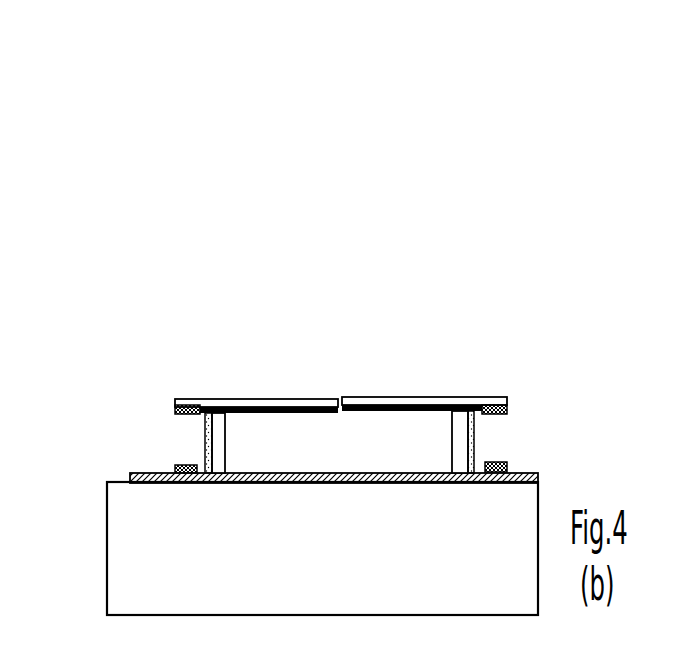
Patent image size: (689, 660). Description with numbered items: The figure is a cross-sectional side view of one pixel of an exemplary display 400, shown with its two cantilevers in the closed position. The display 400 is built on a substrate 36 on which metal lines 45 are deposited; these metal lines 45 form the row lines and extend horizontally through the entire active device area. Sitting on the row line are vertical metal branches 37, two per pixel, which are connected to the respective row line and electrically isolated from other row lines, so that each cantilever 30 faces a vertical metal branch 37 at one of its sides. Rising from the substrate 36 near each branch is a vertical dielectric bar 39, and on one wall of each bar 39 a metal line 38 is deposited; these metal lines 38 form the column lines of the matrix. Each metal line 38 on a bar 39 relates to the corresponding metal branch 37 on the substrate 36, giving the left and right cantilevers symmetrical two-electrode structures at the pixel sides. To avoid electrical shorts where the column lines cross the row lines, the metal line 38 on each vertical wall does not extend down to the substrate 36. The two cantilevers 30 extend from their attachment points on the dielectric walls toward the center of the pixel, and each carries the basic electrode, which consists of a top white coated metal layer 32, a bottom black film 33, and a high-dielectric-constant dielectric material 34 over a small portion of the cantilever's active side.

The display 400 is at (324, 335).
The cantilever 30 is at (340, 369).
The top white coated metal layer 32 is at (237, 400).
The bottom black film 33 is at (265, 413).
The high-dielectric-constant dielectric material 34 is at (175, 410).
The substrate 36 is at (140, 557).
The vertical metal branch 37 is at (180, 467).
The metal line 38 is at (207, 435).
The vertical dielectric bar 39 is at (222, 442).
The metal line 45 is at (132, 472).